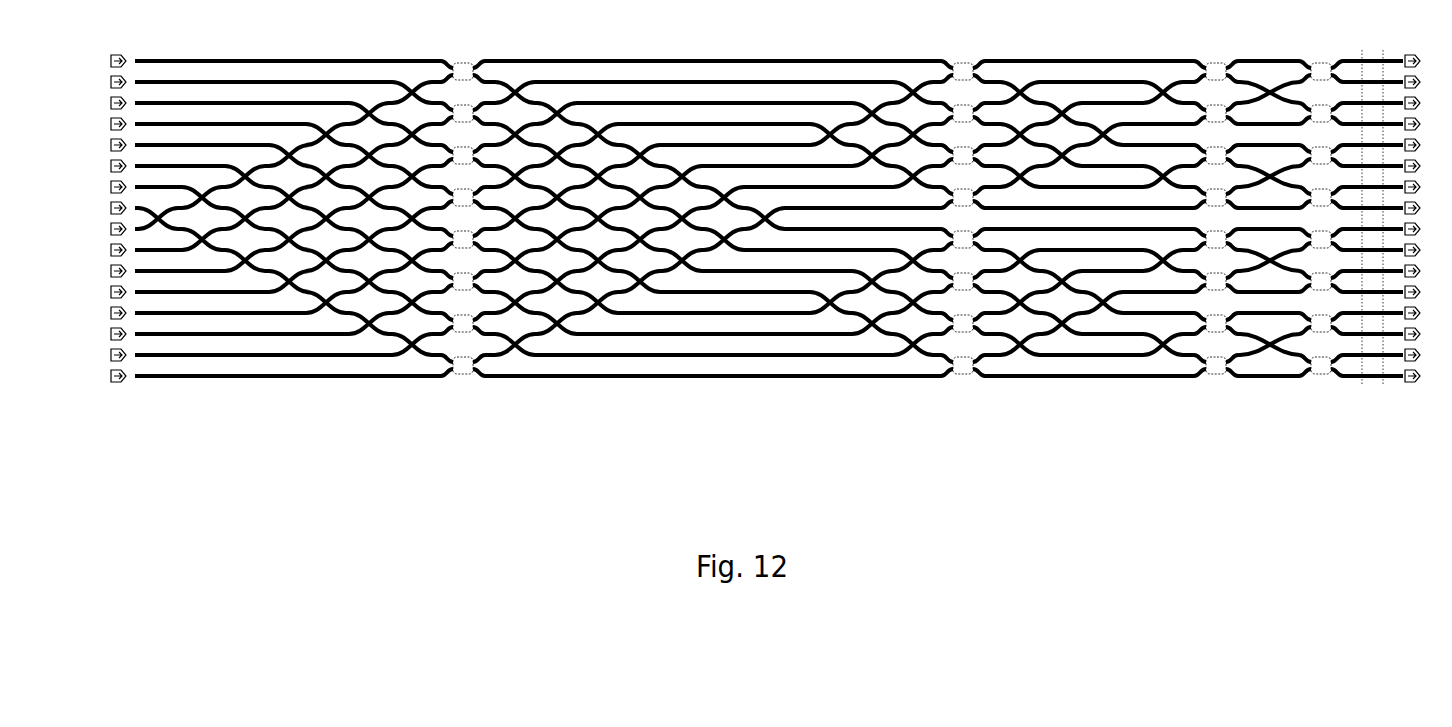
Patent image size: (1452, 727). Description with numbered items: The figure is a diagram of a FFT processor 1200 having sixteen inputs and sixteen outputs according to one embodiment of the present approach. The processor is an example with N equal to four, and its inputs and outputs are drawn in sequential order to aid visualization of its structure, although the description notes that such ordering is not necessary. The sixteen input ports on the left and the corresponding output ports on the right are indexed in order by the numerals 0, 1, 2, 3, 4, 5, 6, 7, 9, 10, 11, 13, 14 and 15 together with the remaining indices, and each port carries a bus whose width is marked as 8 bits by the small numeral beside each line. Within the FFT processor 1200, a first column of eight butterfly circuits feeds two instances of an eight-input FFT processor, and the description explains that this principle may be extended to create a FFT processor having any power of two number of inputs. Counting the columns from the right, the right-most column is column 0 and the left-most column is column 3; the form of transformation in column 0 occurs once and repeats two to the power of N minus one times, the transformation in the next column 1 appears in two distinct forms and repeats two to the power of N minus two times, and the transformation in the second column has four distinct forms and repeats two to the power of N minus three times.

The FFT processor 1200 is at (767, 254).
The 8-bit bus 8 is at (764, 213).
The column 0 is at (767, 61).
The column 1 is at (767, 82).
The port 2 (A2/Q2) 2 is at (767, 103).
The column 3 is at (767, 124).
The port 4 (A4/Q4) 4 is at (767, 145).
The port 5 (A5/Q5) 5 is at (767, 166).
The port 6 (A6/Q6) 6 is at (767, 187).
The port 7 (A7/Q7) 7 is at (767, 208).
The port 9 (A9/Q9) 9 is at (767, 250).
The port 10 (A10/Q10) 10 is at (767, 271).
The port 11 (A11/Q11) 11 is at (767, 292).
The port 13 (A13/Q13) 13 is at (767, 334).
The port 14 (A14/Q14) 14 is at (767, 355).
The port 15 (A15/Q15) 15 is at (767, 376).